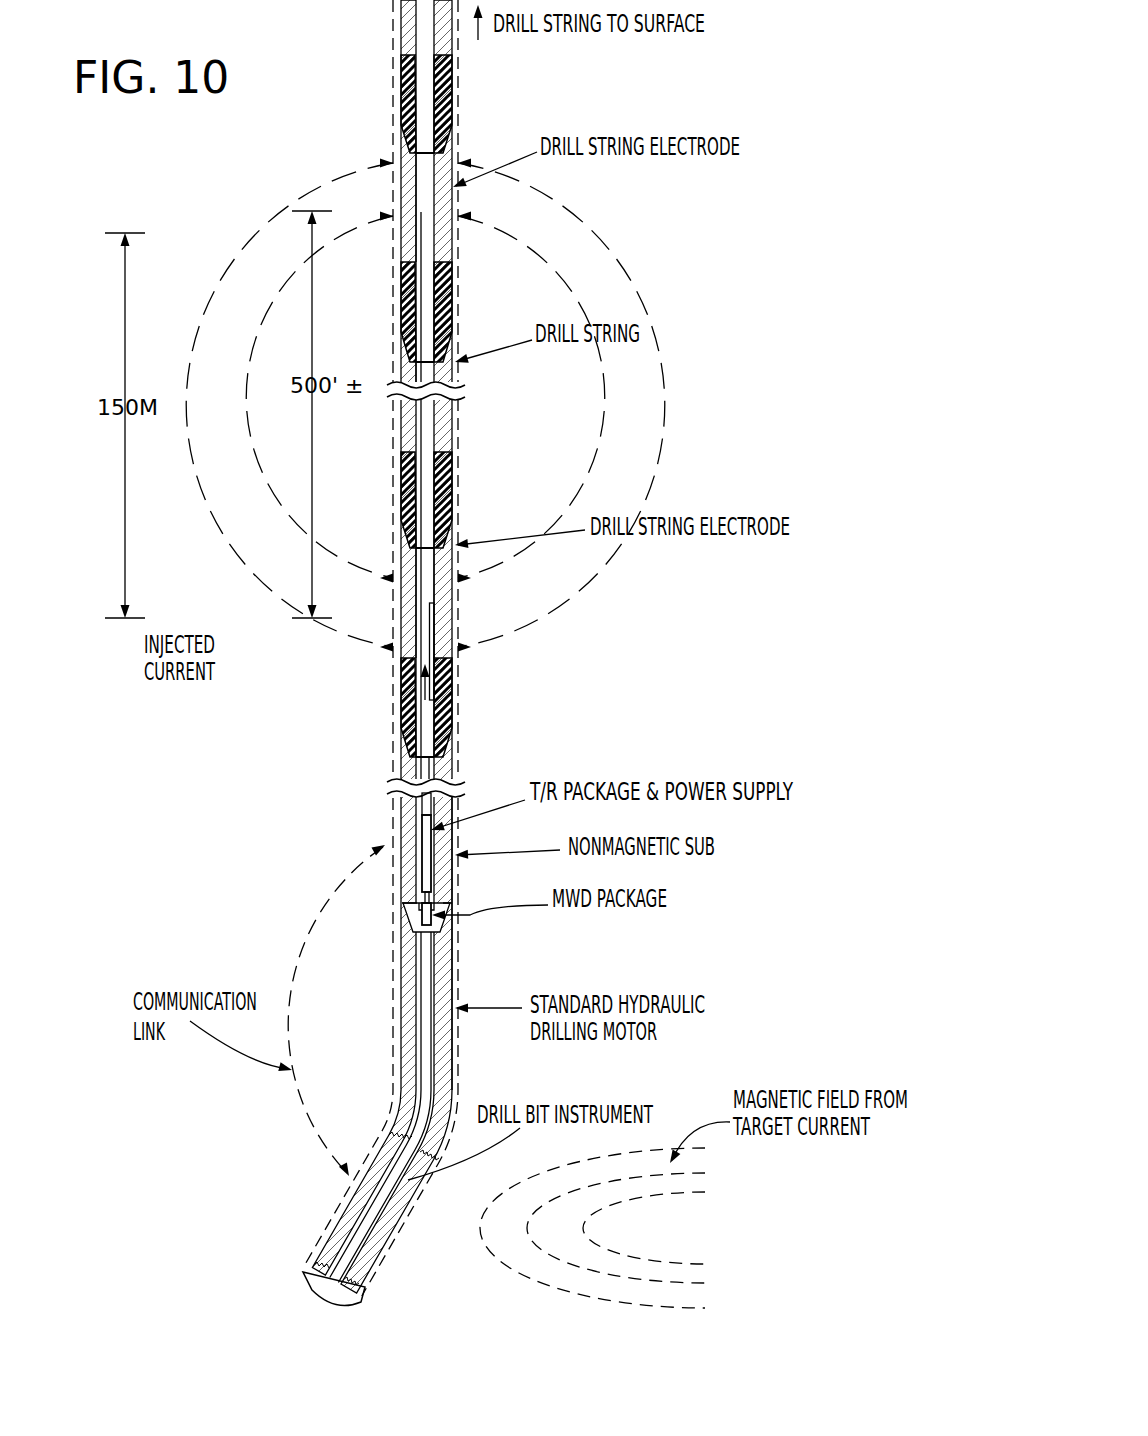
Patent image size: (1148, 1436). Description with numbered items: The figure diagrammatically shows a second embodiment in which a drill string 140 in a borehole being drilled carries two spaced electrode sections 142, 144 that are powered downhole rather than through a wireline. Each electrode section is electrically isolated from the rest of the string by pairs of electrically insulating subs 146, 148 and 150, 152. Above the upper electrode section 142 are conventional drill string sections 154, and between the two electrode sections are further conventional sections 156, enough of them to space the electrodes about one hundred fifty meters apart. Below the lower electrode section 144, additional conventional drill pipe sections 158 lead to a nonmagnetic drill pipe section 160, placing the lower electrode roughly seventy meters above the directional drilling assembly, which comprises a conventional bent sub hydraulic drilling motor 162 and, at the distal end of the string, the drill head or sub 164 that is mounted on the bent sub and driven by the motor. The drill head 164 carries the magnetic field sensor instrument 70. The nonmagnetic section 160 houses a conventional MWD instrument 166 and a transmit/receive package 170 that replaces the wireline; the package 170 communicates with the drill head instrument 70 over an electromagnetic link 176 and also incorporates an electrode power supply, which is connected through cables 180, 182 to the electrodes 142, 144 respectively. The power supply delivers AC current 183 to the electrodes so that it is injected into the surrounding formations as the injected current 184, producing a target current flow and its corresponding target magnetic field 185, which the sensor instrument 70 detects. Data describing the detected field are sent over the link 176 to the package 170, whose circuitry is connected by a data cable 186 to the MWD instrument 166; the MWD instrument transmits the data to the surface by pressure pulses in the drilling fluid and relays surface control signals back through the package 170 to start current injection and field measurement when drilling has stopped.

The magnetic field sensor instrument 70 is at (355, 1230).
The drill string 140 is at (390, 47).
The electrode section 142 is at (408, 158).
The electrode section 144 is at (410, 612).
The electrically insulating sub 146 is at (407, 88).
The electrically insulating sub 148 is at (407, 285).
The electrically insulating sub 150 is at (407, 497).
The electrically insulating sub 152 is at (452, 690).
The conventional drill string sections 154 is at (408, 25).
The conventional drill string sections 156 is at (408, 365).
The conventional drill pipe sections 158 is at (405, 738).
The nonmagnetic drill pipe section 160 is at (447, 802).
The bent sub hydraulic drilling motor 162 is at (453, 1090).
The drill head 164 is at (399, 1234).
The MWD instrument 166 is at (415, 913).
The transmit/receive package 170 is at (425, 834).
The electromagnetic link 176 is at (295, 1100).
The cable 180 is at (422, 765).
The cable 182 is at (433, 633).
The AC current 183 is at (422, 680).
The injected current 184 is at (628, 576).
The target magnetic field 185 is at (495, 1274).
The data cable 186 is at (427, 897).